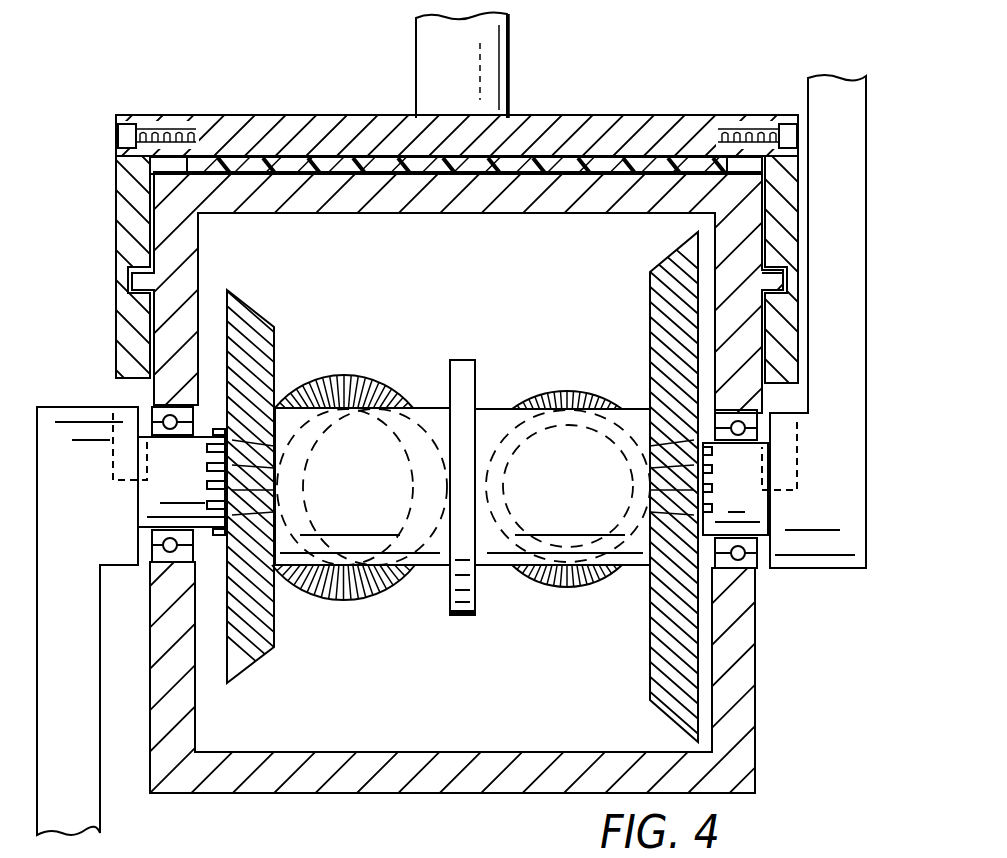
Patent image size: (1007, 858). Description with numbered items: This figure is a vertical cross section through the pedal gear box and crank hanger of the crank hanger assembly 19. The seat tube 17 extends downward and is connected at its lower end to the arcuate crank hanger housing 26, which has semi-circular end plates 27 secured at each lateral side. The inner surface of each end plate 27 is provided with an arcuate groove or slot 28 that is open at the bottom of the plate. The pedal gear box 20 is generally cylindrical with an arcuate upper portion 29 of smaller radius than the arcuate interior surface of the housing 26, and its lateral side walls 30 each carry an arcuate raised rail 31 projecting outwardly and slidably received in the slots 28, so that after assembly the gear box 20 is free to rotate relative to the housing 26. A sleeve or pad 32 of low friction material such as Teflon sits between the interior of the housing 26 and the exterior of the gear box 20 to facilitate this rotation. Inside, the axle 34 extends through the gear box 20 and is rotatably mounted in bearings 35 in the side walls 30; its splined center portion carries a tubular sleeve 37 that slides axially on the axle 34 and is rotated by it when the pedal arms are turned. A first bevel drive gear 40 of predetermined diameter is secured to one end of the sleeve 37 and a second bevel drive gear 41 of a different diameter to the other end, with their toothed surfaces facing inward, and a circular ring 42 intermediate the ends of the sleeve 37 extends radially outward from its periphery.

The seat tube 17 is at (510, 52).
The drive assembly 19 is at (732, 98).
The pedal gear box 20 is at (745, 712).
The crank hanger housing 26 is at (283, 116).
The end plates 27 is at (115, 205).
The arcuate groove or slot 28 is at (130, 262).
The arcuate upper portion 29 is at (631, 170).
The lateral side walls 30 is at (150, 648).
The arcuate raised rail 31 is at (140, 282).
The sleeve or pad 32 is at (571, 165).
The axle 34 is at (180, 487).
The bearings 35 is at (167, 567).
The tubular sleeve 37 is at (346, 490).
The first bevel drive gear 40 is at (252, 668).
The second bevel drive gear 41 is at (657, 722).
The circular ring 42 is at (460, 360).